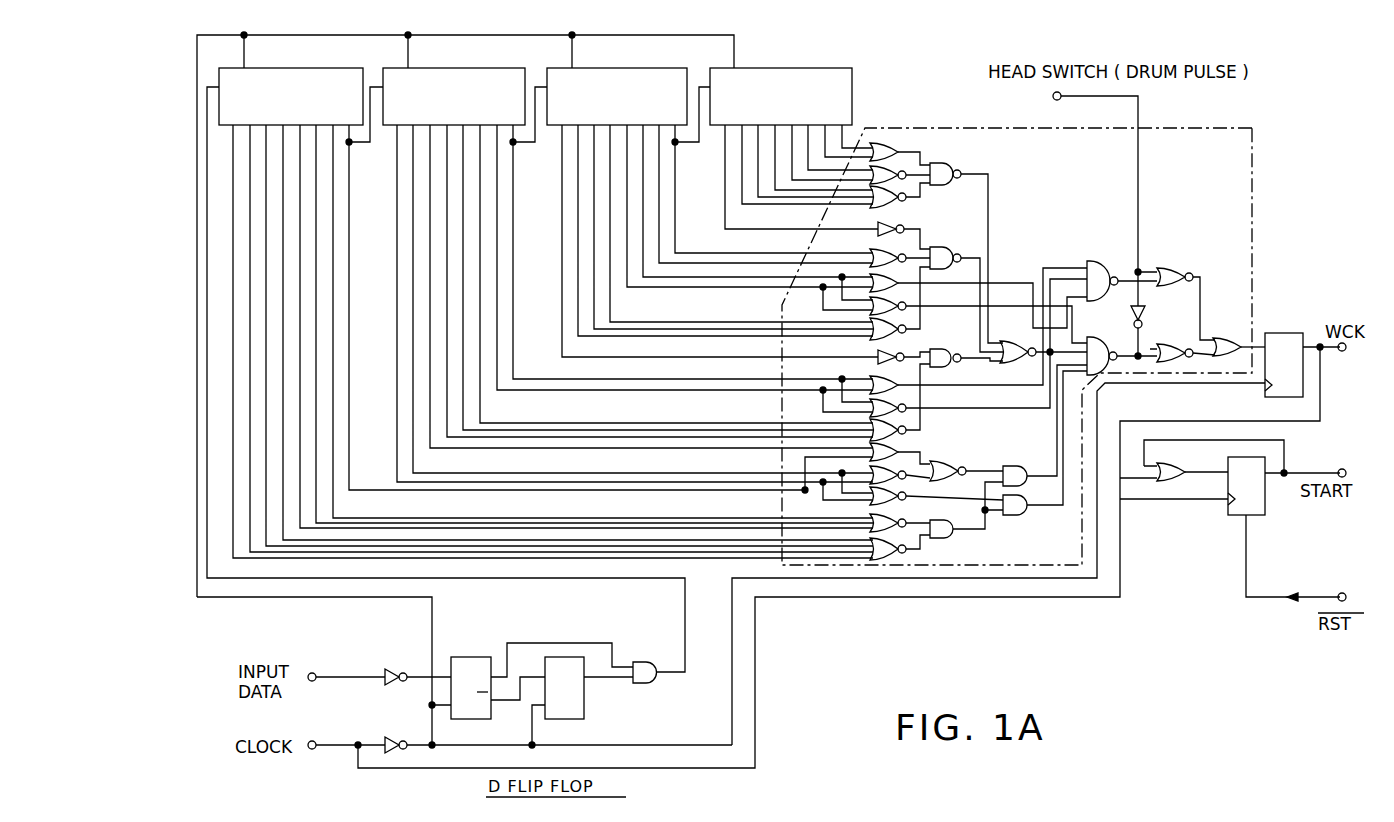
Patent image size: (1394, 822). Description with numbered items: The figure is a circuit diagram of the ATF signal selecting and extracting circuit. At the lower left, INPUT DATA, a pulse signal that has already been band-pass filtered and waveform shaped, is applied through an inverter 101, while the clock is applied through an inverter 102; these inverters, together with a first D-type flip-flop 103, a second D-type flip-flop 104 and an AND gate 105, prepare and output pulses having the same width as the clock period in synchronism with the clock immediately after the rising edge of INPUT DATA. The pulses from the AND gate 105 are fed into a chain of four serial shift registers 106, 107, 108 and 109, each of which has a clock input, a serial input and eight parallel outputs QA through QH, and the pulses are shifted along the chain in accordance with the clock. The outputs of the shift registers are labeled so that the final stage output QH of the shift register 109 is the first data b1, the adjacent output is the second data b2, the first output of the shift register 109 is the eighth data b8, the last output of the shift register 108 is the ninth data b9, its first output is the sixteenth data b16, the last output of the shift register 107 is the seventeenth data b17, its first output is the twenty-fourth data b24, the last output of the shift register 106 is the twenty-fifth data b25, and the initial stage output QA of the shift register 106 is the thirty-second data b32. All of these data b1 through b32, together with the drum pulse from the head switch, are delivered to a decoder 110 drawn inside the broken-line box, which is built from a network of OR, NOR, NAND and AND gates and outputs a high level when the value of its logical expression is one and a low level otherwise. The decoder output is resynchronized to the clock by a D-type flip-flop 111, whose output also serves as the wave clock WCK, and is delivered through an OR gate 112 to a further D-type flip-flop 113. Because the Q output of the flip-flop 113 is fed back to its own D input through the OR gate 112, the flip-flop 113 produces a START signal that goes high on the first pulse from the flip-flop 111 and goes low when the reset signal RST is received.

The inverter 101 is at (390, 669).
The inverter 102 is at (390, 737).
The D-type flip-flop 103 is at (472, 657).
The D-type flip-flop 104 is at (584, 700).
The AND gate 105 is at (642, 662).
The serial shift register 106 is at (298, 68).
The serial shift register 107 is at (461, 68).
The serial shift register 108 is at (625, 68).
The serial shift register 109 is at (788, 68).
The decoder 110 is at (1250, 165).
The D-type flip-flop 111 is at (1281, 333).
The OR gate 112 is at (1164, 463).
The D-type flip-flop 113 is at (1262, 506).
The output data b1 is at (842, 140).
The output data b2 is at (825, 150).
The output data b8 is at (732, 206).
The output data b9 is at (675, 146).
The output data b16 is at (562, 222).
The output data b17 is at (513, 146).
The output data b24 is at (397, 222).
The output data b25 is at (349, 146).
The output data b32 is at (233, 530).